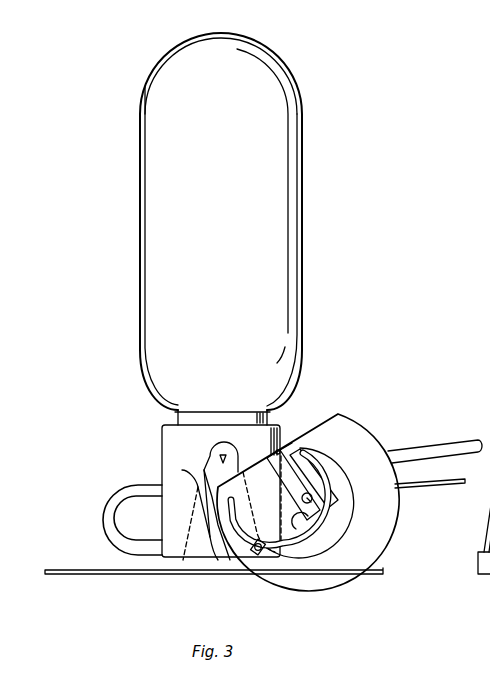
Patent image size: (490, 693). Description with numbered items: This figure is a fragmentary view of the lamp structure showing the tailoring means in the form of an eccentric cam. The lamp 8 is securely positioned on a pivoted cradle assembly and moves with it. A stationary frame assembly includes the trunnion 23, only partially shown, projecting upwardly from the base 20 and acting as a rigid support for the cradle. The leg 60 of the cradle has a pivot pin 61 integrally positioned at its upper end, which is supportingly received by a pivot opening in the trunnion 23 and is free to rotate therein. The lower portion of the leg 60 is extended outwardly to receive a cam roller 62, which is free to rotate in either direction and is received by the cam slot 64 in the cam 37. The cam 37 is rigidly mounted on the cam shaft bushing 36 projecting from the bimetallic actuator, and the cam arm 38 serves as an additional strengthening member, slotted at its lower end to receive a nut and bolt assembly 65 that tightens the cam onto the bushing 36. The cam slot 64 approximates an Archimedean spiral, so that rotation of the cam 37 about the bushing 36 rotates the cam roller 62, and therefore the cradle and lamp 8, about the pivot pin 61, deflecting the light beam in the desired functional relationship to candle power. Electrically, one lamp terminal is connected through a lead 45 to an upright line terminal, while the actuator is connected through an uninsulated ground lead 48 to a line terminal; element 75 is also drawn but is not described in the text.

The lamp 8 is at (297, 258).
The base 20 is at (108, 574).
The trunnion 23 is at (197, 562).
The cam shaft bushing 36 is at (310, 492).
The cam 37 is at (382, 525).
The cam arm 38 is at (302, 498).
The lead 45 is at (108, 513).
The lead 48 is at (443, 484).
The leg 60 is at (210, 466).
The pivot pin 61 is at (222, 458).
The cam roller 62 is at (257, 555).
The cam slot 64 is at (320, 550).
The nut and bolt assembly 65 is at (300, 527).
The block 75 is at (489, 576).